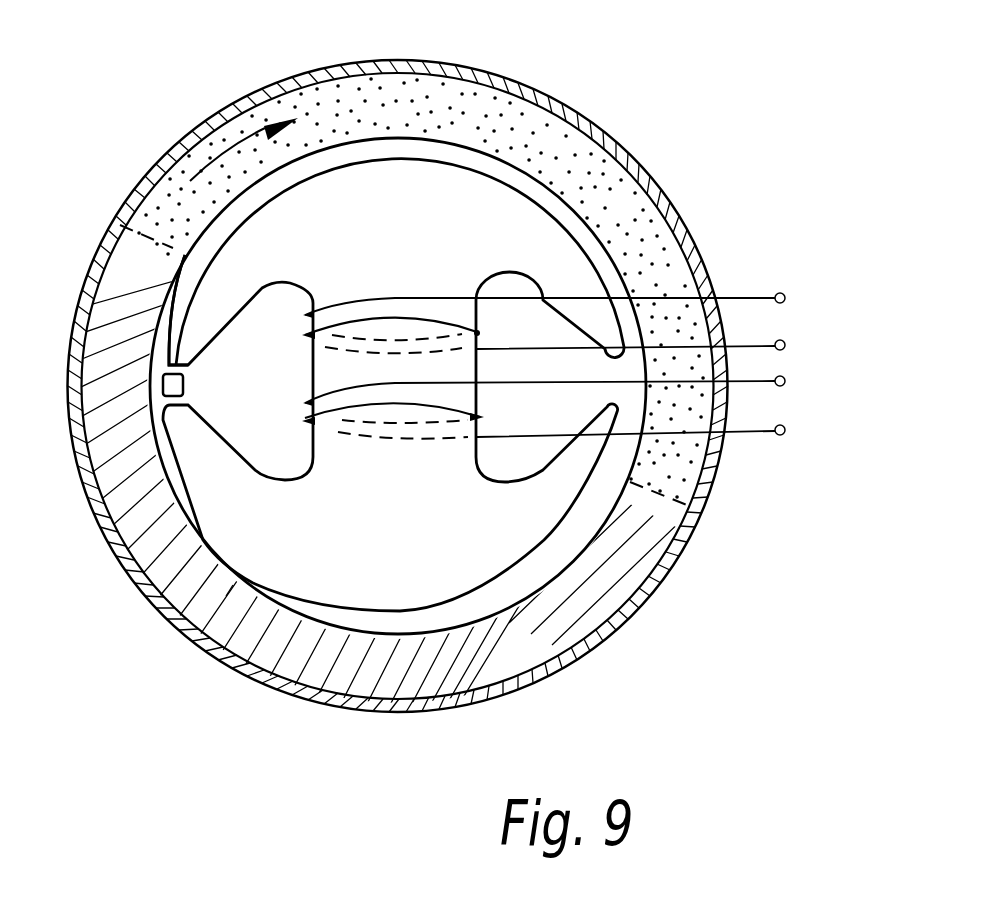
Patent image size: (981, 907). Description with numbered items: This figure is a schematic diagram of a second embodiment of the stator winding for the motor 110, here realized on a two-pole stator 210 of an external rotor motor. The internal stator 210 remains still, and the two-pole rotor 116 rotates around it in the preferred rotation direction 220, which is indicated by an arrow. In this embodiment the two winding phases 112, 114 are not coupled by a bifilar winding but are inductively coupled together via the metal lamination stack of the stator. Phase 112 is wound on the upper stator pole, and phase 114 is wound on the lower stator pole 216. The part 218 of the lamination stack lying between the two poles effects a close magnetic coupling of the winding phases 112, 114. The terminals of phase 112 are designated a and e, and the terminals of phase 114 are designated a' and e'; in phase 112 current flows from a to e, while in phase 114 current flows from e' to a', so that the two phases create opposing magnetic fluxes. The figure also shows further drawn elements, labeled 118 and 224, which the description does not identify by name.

The motor 110 is at (90, 139).
The phase 112 is at (395, 315).
The phase 114 is at (385, 408).
The two-pole rotor 116 is at (583, 118).
The Hall sensor 118 is at (183, 386).
The two-pole stator 210 is at (360, 254).
The lower stator pole 216 is at (500, 548).
The part of the lamination stack 218 is at (328, 370).
The rotation direction 220 is at (238, 140).
The air gap 224 is at (427, 185).